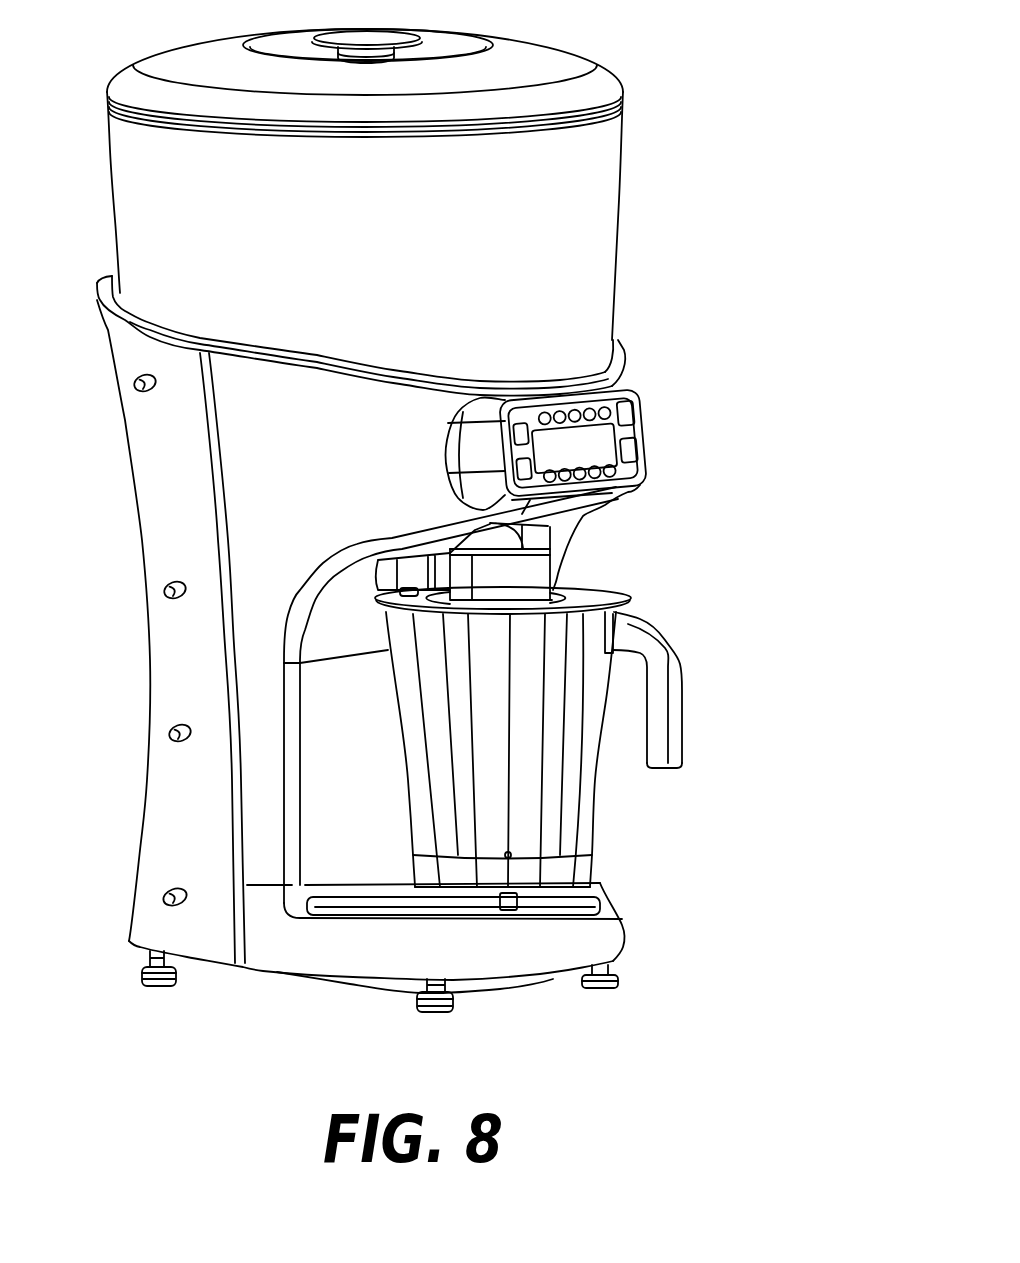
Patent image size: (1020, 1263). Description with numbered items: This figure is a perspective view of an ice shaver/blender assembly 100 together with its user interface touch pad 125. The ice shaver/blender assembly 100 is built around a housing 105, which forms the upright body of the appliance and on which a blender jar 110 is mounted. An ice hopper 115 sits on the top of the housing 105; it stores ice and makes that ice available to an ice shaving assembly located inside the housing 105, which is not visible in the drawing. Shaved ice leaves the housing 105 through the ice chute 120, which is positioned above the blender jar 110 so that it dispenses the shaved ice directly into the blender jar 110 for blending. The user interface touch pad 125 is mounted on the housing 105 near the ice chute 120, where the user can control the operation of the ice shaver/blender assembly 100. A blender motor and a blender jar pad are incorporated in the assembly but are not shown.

The ice shaver/blender assembly 100 is at (481, 520).
The housing 105 is at (180, 650).
The blender jar 110 is at (581, 819).
The ice hopper 115 is at (597, 243).
The ice chute 120 is at (553, 582).
The user interface touch pad 125 is at (597, 440).